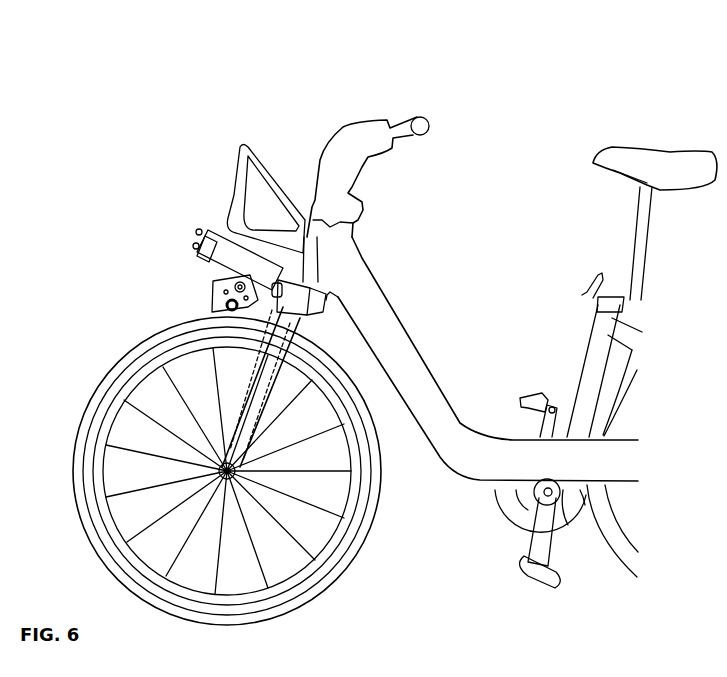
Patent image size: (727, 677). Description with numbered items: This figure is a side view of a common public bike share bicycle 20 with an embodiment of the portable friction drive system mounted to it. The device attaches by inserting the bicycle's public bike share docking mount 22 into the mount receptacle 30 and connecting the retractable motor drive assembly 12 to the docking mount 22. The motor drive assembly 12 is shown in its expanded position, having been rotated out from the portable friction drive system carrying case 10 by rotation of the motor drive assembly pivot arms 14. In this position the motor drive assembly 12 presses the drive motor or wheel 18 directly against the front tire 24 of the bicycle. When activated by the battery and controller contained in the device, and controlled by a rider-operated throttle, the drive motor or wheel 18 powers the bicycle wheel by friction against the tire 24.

The portable friction drive system carrying case 10 is at (203, 237).
The retractable motor drive assembly 12 is at (215, 305).
The motor drive assembly pivot arms 14 is at (270, 295).
The drive motor or wheel for friction drive system 18 is at (288, 322).
The public bike share bicycle 20 is at (352, 120).
The public bike share docking mount 22 is at (230, 283).
The front tires of public bike share bicycle 24 is at (110, 368).
The mount receptacle 30 is at (278, 283).